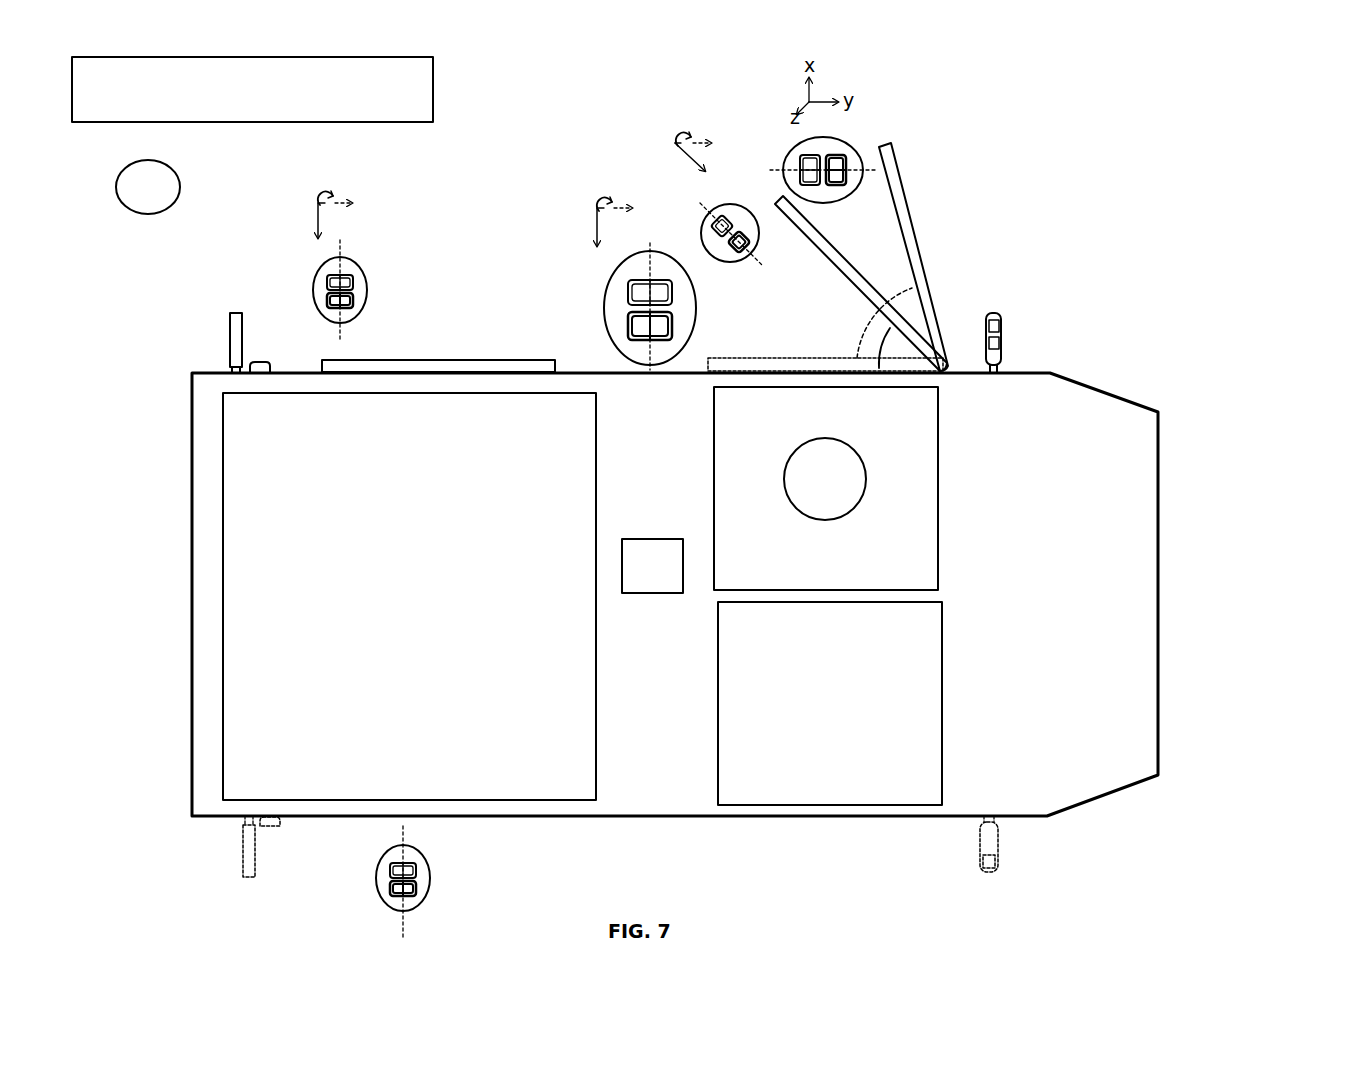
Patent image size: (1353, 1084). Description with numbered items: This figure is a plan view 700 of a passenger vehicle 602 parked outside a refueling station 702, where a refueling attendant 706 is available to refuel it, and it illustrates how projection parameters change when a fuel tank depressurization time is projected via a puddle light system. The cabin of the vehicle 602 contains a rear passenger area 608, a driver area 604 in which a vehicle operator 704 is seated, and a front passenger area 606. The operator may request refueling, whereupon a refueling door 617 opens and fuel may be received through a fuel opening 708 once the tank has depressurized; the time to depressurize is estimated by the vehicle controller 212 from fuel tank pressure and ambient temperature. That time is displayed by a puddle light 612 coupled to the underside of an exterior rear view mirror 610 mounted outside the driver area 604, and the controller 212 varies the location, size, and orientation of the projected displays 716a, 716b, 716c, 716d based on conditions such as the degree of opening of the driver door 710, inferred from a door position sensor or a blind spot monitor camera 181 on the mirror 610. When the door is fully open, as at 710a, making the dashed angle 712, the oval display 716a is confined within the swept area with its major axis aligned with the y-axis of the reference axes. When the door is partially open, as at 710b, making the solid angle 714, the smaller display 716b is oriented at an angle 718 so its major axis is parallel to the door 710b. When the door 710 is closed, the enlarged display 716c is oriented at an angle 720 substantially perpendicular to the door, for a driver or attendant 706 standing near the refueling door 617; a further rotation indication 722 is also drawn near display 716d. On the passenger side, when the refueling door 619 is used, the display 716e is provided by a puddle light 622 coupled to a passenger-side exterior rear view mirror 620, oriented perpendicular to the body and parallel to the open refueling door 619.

The plan view 700 is at (1258, 120).
The refueling station 702 is at (252, 89).
The refueling attendant 706 is at (148, 187).
The passenger vehicle 602 is at (1073, 383).
The rear passenger area 608 is at (409, 596).
The vehicle controller 212 is at (652, 566).
The driver area 604 is at (826, 488).
The vehicle operator 704 is at (825, 479).
The front passenger area 606 is at (830, 703).
The refueling door 617 is at (236, 313).
The fuel opening 708 is at (260, 362).
The rotation axis 722 is at (345, 205).
The display 716d is at (352, 262).
The angle 720 is at (622, 214).
The display 716c is at (605, 306).
The angle 718 is at (703, 141).
The display 716b is at (725, 206).
The display 716a is at (850, 141).
The driver door 710 is at (748, 358).
The driver door in fully open position 710a is at (918, 228).
The driver door in partially open position 710b is at (826, 245).
The angle 712 is at (895, 289).
The angle 714 is at (877, 348).
The exterior rear view mirror 610 is at (992, 313).
The puddle light 612 is at (999, 326).
The blind spot monitor camera 181 is at (999, 342).
The refueling door 619 is at (255, 870).
The display 716e is at (428, 860).
The exterior rear view mirror 620 is at (989, 872).
The puddle light 622 is at (994, 861).